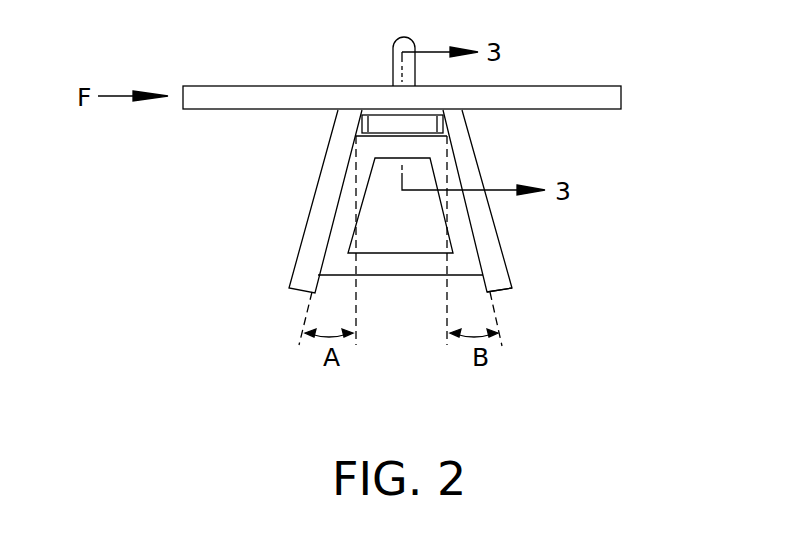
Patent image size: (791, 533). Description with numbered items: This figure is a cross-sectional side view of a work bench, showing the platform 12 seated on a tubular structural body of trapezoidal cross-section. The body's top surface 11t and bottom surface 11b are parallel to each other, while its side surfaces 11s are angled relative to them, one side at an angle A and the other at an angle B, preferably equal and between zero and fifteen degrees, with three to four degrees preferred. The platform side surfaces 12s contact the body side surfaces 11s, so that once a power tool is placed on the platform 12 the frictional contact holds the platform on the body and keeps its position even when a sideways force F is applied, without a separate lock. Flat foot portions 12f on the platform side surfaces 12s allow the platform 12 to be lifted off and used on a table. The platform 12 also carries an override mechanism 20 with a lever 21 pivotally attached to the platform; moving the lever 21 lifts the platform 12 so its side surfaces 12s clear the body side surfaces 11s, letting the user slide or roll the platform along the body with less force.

The platform 12 is at (588, 98).
The lever 21 is at (402, 37).
The override mechanism 20 is at (389, 125).
The top surface 11t is at (418, 148).
The bottom surface 11b is at (397, 265).
The side surfaces 11s is at (343, 230).
The platform side surfaces 12s is at (490, 243).
The flat foot portions 12f is at (500, 282).